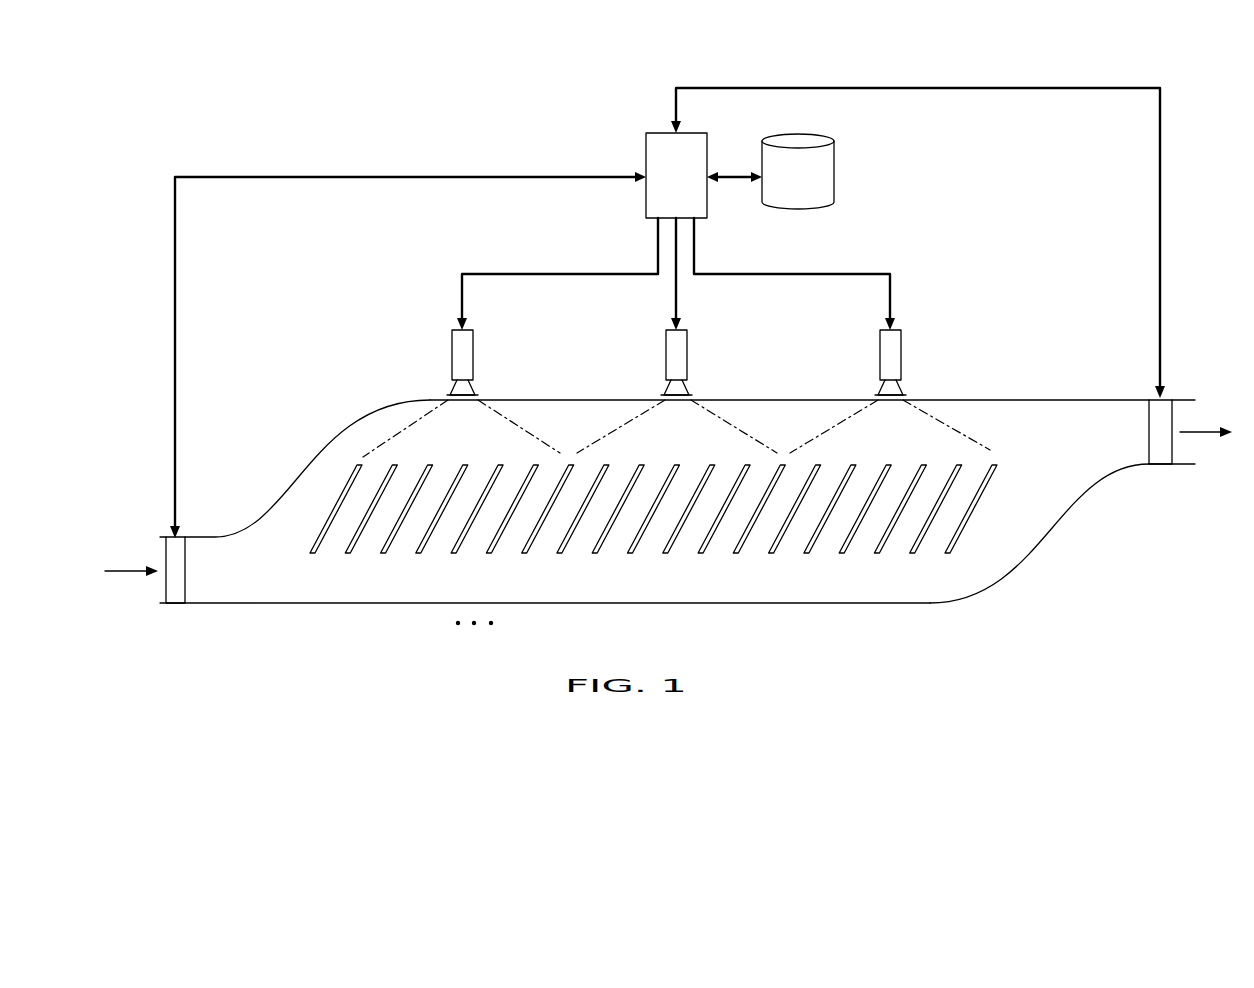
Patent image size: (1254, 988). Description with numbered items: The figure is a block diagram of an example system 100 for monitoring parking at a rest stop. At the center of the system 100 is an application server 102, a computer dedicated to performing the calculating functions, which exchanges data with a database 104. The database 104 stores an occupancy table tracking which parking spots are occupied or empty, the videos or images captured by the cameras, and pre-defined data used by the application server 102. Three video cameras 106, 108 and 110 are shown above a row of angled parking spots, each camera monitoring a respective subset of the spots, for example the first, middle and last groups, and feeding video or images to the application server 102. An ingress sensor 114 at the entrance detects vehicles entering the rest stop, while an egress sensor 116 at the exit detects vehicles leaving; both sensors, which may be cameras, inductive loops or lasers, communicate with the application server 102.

The system 100 is at (518, 46).
The application server 102 is at (645, 198).
The database 104 is at (836, 173).
The video camera 106 is at (475, 355).
The video camera 108 is at (689, 355).
The video camera 110 is at (903, 355).
The ingress sensor 114 is at (172, 548).
The egress sensor 116 is at (1162, 410).